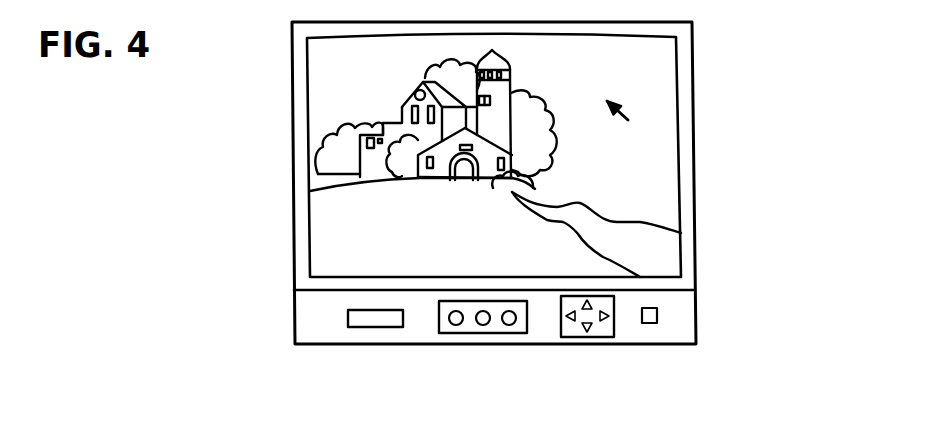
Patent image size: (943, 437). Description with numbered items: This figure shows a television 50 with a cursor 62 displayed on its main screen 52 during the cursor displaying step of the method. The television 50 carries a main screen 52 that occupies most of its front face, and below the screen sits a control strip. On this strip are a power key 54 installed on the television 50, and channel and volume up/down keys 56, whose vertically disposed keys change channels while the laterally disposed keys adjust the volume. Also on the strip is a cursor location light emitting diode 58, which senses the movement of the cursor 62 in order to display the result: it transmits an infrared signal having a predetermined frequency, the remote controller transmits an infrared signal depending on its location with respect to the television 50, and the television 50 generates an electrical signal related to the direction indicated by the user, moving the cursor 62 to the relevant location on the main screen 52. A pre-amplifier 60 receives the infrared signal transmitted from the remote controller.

The television 50 is at (693, 65).
The main screen 52 is at (668, 107).
The power key 54 is at (648, 323).
The channel and volume up/down keys 56 is at (602, 337).
The cursor location light emitting diode 58 is at (467, 333).
The pre-amplifier 60 is at (375, 327).
The cursor 62 is at (628, 120).